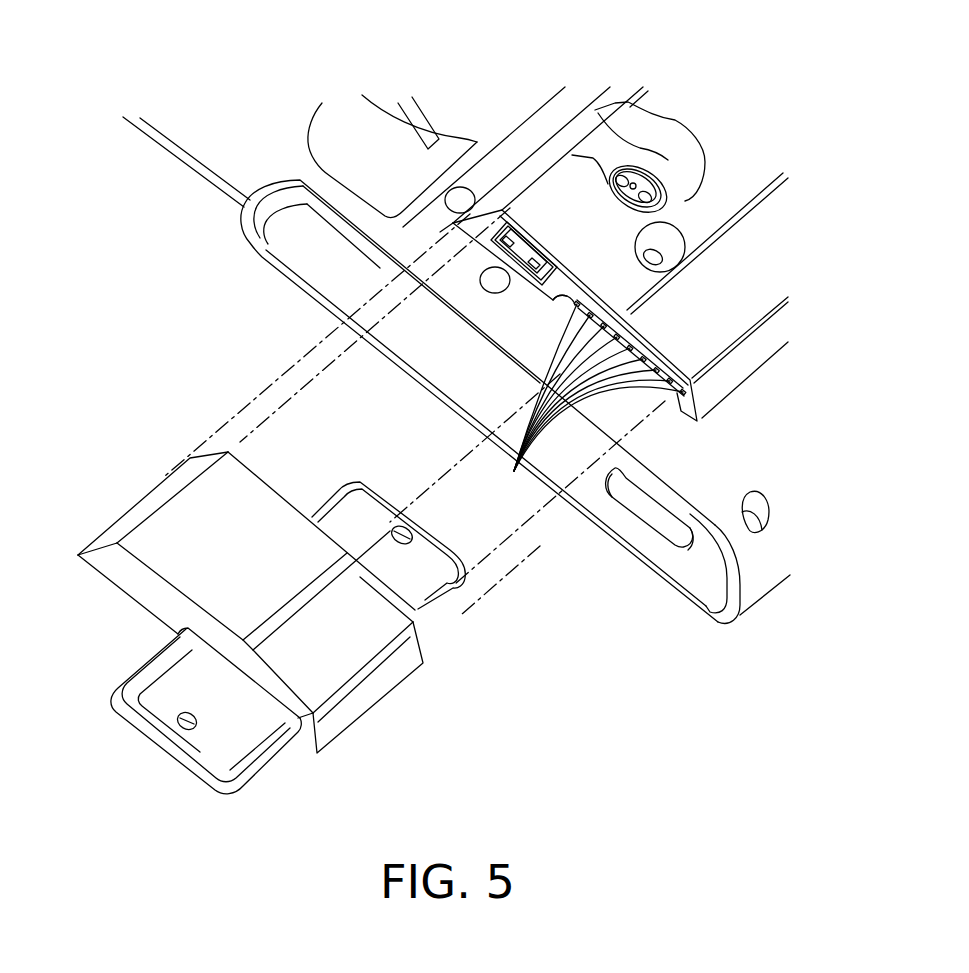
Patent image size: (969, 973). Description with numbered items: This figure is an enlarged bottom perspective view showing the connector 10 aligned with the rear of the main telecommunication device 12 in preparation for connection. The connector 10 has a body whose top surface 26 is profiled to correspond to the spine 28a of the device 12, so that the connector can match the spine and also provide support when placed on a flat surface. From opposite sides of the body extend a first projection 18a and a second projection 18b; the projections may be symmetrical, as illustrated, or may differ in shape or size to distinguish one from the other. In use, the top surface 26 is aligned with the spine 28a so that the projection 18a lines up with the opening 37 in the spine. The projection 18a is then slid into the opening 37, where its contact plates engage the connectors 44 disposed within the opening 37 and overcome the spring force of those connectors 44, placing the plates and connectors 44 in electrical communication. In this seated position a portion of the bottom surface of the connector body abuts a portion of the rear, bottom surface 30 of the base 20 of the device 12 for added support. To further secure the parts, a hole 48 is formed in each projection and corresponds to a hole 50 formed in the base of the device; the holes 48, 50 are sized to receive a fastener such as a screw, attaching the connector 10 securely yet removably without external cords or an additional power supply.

The connector 10 is at (263, 643).
The main telecommunication device 12 is at (188, 93).
The first projection 18a is at (440, 598).
The second projection 18b is at (223, 773).
The base 20 is at (282, 240).
The top surface 26 is at (250, 563).
The spine 28a is at (748, 293).
The rear, bottom surface 30 is at (642, 419).
The opening 37 is at (552, 324).
The connectors 44 is at (570, 405).
The hole 48 is at (399, 529).
The hole 50 is at (663, 245).